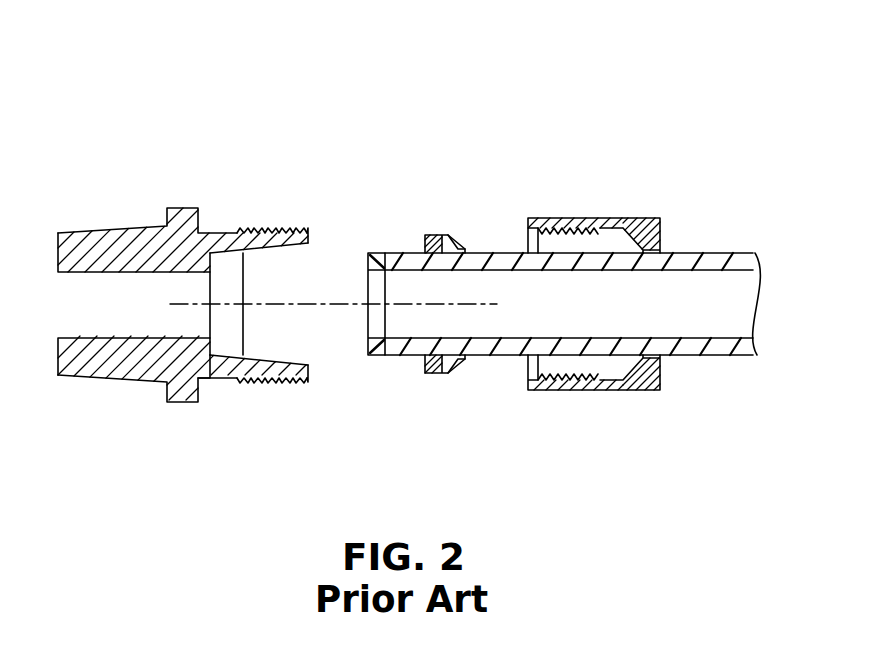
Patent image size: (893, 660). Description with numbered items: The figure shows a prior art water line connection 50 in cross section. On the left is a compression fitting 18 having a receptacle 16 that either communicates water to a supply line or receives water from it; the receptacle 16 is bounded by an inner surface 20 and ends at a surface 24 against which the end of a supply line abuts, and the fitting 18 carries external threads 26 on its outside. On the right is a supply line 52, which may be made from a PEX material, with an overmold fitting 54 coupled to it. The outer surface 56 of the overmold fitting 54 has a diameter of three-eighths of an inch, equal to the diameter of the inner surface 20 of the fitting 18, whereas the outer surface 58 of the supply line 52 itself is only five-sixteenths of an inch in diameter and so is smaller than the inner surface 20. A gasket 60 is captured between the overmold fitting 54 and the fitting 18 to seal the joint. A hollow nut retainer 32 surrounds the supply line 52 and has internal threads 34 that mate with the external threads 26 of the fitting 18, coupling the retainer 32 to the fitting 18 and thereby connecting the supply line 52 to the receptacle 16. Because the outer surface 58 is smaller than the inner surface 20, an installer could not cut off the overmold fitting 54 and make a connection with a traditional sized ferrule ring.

The receptacle 16 is at (275, 273).
The compression fitting 18 is at (192, 168).
The inner surface 20 is at (232, 355).
The surface 24 is at (212, 262).
The external threads 26 is at (272, 385).
The hollow nut retainer 32 is at (630, 208).
The internal threads 34 is at (567, 374).
The water line connection 50 is at (565, 100).
The supply line 52 is at (742, 248).
The overmold fitting 54 is at (457, 233).
The outer surface 56 is at (372, 355).
The outer surface 58 is at (720, 353).
The gasket 60 is at (423, 230).